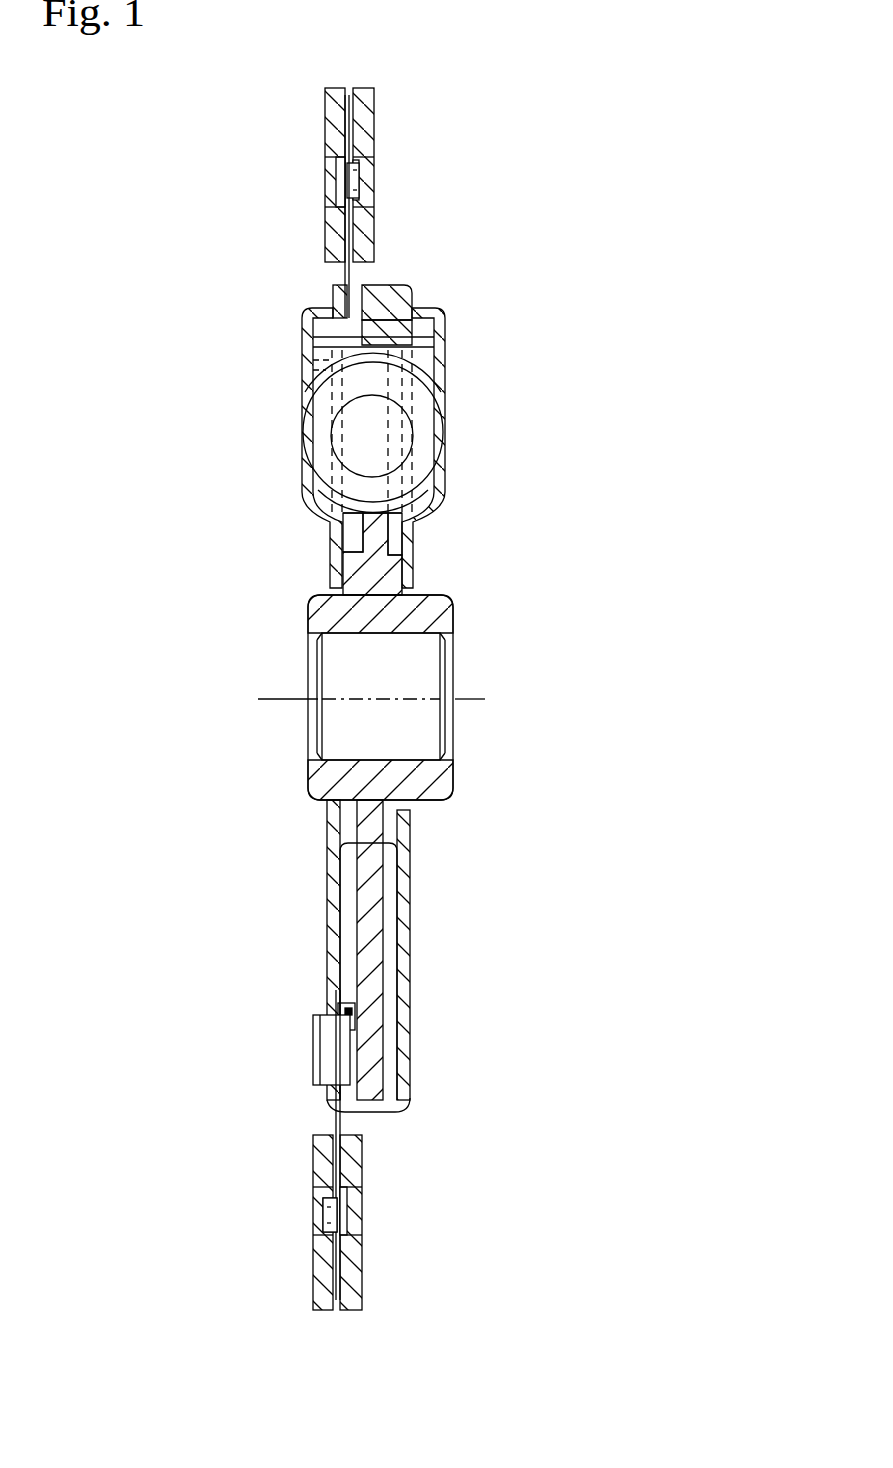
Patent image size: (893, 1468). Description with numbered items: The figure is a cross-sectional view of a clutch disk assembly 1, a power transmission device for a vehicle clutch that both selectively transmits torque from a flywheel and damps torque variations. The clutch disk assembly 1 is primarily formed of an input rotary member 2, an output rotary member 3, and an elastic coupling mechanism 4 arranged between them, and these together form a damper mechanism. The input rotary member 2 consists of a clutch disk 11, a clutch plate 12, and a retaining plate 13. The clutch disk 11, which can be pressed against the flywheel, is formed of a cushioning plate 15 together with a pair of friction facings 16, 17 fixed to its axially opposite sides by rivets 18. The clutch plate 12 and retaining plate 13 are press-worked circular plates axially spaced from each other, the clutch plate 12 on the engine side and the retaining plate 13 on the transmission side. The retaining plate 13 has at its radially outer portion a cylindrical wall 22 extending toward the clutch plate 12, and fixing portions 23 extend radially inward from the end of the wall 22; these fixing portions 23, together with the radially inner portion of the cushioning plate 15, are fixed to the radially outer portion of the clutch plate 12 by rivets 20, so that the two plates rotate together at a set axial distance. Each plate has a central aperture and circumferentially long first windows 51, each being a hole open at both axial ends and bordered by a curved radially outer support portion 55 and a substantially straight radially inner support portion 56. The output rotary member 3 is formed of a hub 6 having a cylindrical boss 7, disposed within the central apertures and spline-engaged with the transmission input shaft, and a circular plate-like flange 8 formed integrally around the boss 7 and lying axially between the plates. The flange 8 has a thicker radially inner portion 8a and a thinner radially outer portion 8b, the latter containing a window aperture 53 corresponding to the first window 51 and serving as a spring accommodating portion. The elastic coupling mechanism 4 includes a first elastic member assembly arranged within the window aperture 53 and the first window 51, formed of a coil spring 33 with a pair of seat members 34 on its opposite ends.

The clutch disk assembly 1 is at (416, 662).
The input rotary member 2 is at (358, 643).
The output rotary member 3 is at (433, 806).
The elastic coupling mechanism 4 is at (385, 406).
The hub 6 is at (421, 677).
The boss 7 is at (420, 612).
The flange 8 is at (387, 953).
The radially inner portion 8a is at (385, 572).
The radially outer portion 8b is at (395, 292).
The clutch disk 11 is at (296, 161).
The clutch plate 12 is at (332, 883).
The retaining plate 13 is at (405, 893).
The cushioning plate 15 is at (343, 223).
The friction facing 16 is at (330, 140).
The friction facing 17 is at (363, 130).
The rivets 18 is at (360, 178).
The rivets 20 is at (332, 1052).
The cylindrical wall 22 is at (387, 280).
The fixing portions 23 is at (335, 1007).
The coil spring 33 is at (430, 443).
The seat members 34 is at (310, 363).
The first window 51 is at (467, 368).
The window aperture 53 is at (380, 315).
The radially outer support portion 55 is at (385, 335).
The radially inner support portion 56 is at (425, 500).